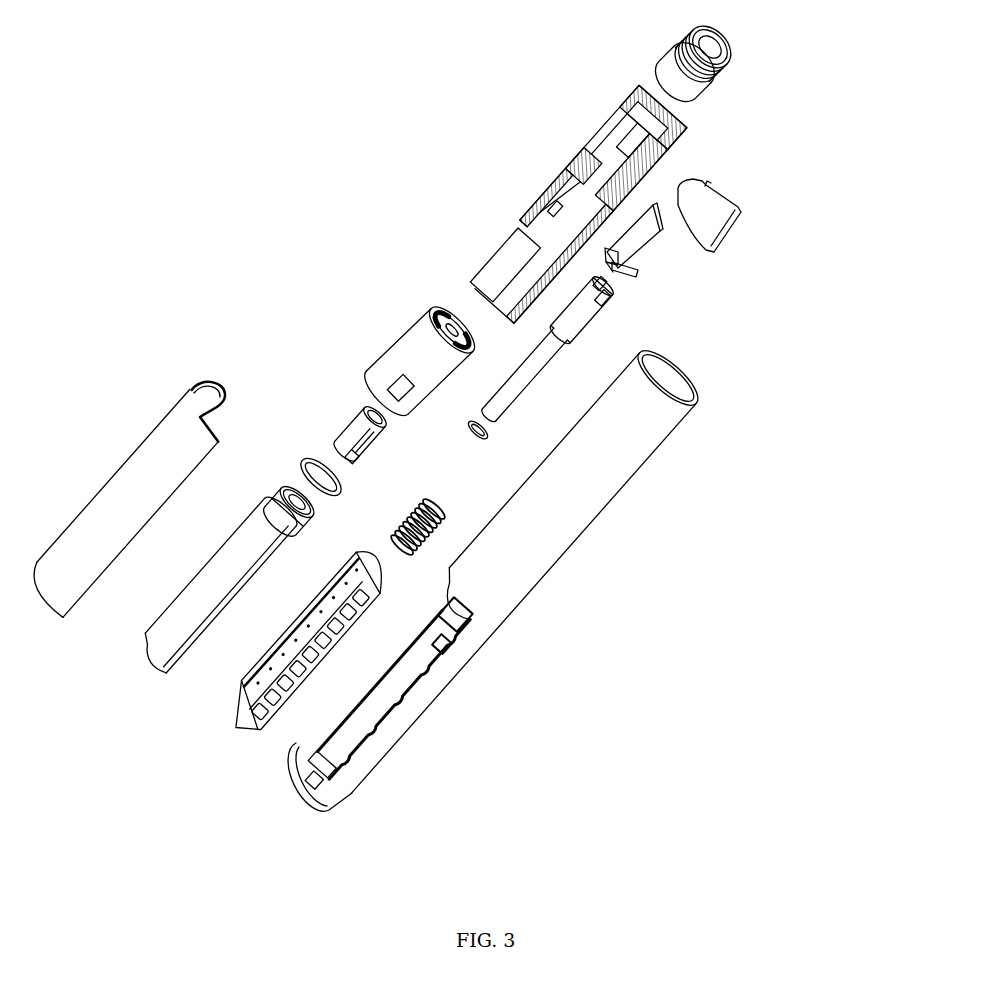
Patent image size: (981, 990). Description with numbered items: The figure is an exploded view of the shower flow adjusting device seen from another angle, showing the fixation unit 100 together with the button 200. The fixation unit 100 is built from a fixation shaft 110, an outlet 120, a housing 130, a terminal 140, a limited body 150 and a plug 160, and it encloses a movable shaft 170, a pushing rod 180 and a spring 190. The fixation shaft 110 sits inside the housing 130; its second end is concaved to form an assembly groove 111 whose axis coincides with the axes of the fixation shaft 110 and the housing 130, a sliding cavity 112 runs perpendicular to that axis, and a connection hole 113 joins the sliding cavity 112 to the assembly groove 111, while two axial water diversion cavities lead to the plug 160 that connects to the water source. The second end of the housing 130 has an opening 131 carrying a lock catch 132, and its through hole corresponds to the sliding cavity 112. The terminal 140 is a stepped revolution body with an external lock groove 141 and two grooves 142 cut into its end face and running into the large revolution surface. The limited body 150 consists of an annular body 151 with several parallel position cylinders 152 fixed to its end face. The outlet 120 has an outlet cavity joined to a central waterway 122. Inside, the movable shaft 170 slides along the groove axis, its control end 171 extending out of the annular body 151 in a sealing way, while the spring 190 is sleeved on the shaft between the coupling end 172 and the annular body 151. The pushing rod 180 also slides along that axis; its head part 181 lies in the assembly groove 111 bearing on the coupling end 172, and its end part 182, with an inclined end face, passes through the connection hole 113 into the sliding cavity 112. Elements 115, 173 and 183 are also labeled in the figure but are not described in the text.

The fixation unit 100 is at (574, 615).
The fixation shaft 110 is at (545, 185).
The assembly groove 111 is at (548, 230).
The sliding cavity 112 is at (635, 153).
The connection hole 113 is at (590, 183).
The seal member 115 is at (565, 203).
The outlet 120 is at (206, 797).
The central waterway 122 is at (277, 497).
The housing 130 is at (577, 497).
The opening 131 is at (388, 690).
The lock catch 132 is at (450, 640).
The terminal 140 is at (422, 340).
The lock groove 141 is at (410, 387).
The grooves 142 is at (447, 300).
The limited body 150 is at (321, 410).
The annular body 151 is at (365, 403).
The position cylinders 152 is at (343, 442).
The plug 160 is at (661, 50).
The movable shaft 170 is at (530, 360).
The control end 171 is at (495, 413).
The coupling end 172 is at (605, 303).
The tab 173 is at (608, 297).
The pushing rod 180 is at (643, 248).
The head part 181 is at (632, 268).
The end part 182 is at (658, 217).
The clip 183 is at (617, 273).
The spring 190 is at (418, 513).
The button 200 is at (723, 223).